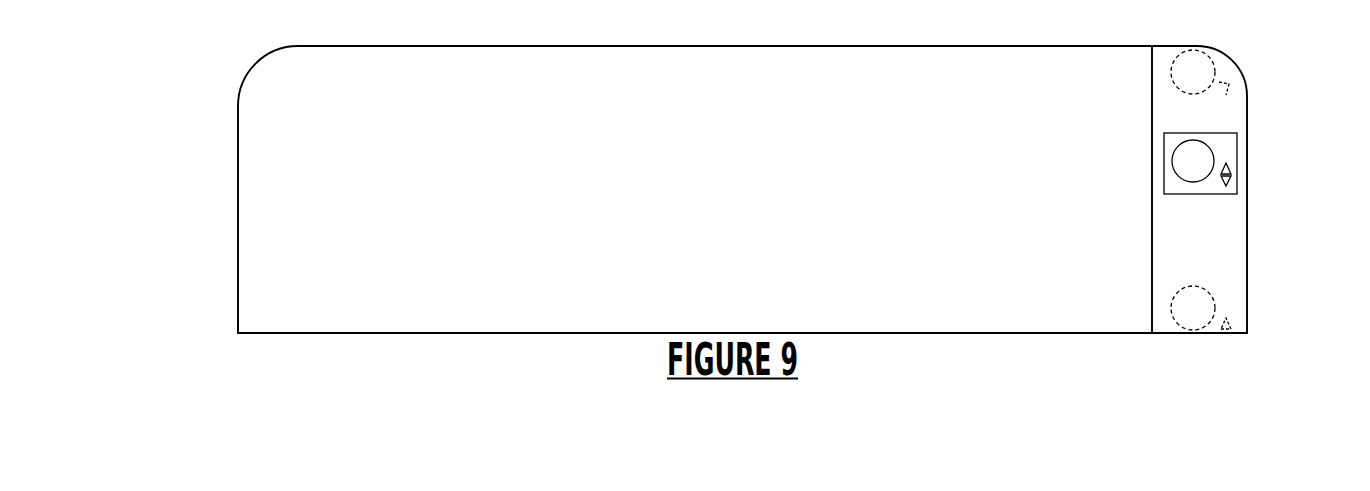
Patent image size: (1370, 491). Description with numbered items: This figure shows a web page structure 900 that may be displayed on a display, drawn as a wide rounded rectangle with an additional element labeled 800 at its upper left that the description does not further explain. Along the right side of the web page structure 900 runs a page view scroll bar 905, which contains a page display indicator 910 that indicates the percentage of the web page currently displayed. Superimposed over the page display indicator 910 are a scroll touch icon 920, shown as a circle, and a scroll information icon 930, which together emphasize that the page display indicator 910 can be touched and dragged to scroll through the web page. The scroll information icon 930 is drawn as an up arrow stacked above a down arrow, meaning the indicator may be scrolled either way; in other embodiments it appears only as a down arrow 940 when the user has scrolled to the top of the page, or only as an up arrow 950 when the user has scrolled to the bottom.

The device housing 800 is at (184, 0).
The web page structure 900 is at (252, 344).
The page view scroll bar 905 is at (1167, 46).
The page display indicator 910 is at (1240, 180).
The scroll touch icon 920 is at (1205, 50).
The scroll information icon 930 is at (1225, 187).
The down arrow 940 is at (1236, 90).
The up arrow 950 is at (1256, 322).